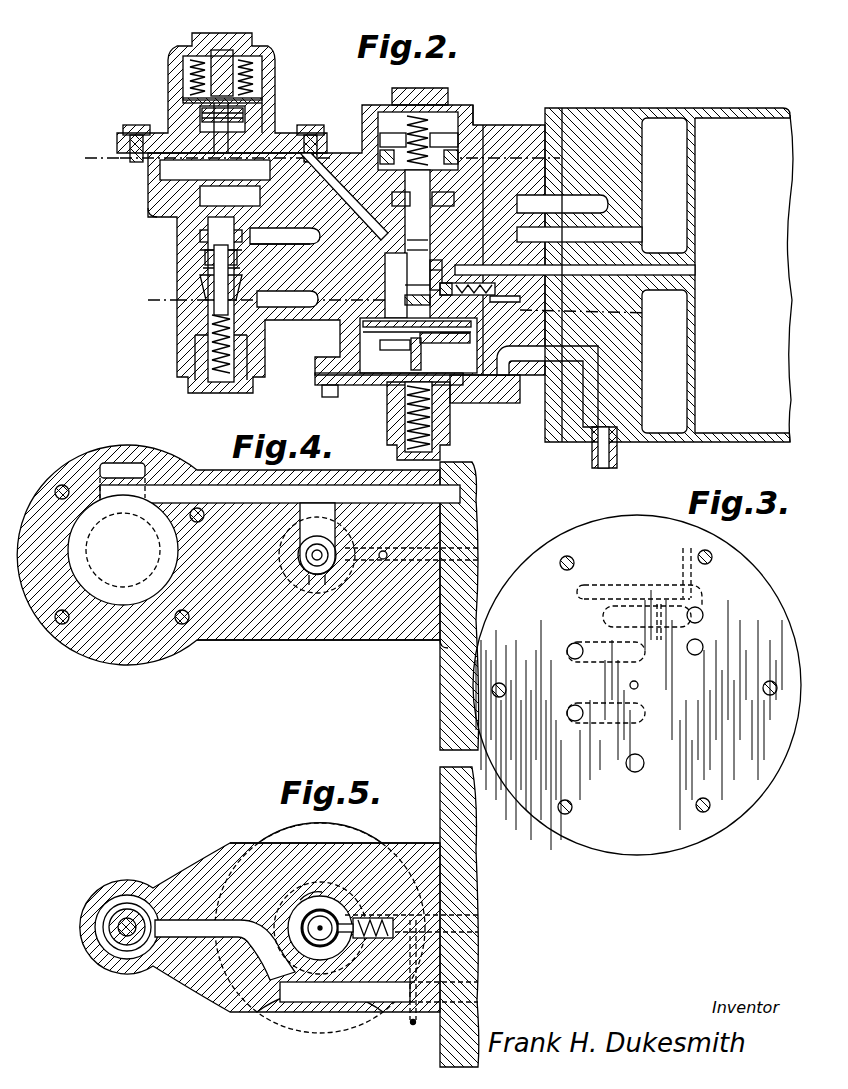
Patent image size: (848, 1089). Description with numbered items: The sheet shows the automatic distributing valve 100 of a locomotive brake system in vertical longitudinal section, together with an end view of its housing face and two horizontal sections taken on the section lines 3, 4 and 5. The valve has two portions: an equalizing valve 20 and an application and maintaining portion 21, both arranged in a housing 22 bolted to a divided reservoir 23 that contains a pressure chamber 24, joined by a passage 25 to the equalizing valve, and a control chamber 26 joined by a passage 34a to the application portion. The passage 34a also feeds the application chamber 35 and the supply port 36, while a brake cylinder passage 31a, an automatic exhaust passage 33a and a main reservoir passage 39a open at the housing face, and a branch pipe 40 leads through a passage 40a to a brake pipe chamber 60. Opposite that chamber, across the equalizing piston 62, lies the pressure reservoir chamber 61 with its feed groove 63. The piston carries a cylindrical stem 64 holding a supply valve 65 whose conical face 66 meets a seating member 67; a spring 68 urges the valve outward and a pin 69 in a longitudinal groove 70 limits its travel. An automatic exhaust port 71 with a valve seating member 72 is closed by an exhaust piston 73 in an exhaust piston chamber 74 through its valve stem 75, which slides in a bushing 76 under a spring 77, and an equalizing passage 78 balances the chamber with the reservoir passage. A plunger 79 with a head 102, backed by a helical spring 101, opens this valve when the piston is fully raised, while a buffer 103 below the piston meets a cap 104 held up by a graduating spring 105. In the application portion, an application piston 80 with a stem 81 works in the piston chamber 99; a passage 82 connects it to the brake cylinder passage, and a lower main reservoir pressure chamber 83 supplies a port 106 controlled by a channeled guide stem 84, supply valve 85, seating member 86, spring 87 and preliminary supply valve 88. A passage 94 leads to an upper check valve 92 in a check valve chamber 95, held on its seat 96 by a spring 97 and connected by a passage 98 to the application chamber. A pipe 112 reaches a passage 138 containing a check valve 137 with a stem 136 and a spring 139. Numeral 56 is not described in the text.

In FIG. 2, the section line 3 is at (562, 442).
In FIG. 2, the section line 4 is at (363, 195).
In FIG. 2, the section line 5 is at (398, 307).
In FIG. 2, the equalizing valve 20 is at (381, 86).
In FIG. 4, the equalizing valve 20 is at (331, 646).
In FIG. 5, the equalizing valve 20 is at (335, 1032).
In FIG. 2, the application and maintaining portion 21 is at (151, 69).
In FIG. 4, the application and maintaining portion 21 is at (149, 446).
In FIG. 5, the application and maintaining portion 21 is at (81, 881).
In FIG. 2, the housing 22 is at (148, 200).
In FIG. 4, the housing 22 is at (118, 665).
In FIG. 3, the housing 22 is at (637, 685).
In FIG. 5, the housing 22 is at (230, 1005).
In FIG. 2, the divided reservoir 23 is at (748, 108).
In FIG. 4, the divided reservoir 23 is at (478, 528).
In FIG. 5, the divided reservoir 23 is at (478, 886).
In FIG. 2, the pressure chamber 24 is at (745, 278).
In FIG. 2, the passage 25 is at (690, 270).
In FIG. 4, the passage 25 is at (478, 548).
In FIG. 3, the passage 25 is at (638, 685).
In FIG. 2, the control chamber 26 is at (664, 361).
In FIG. 2, the brake cylinder passage 31a is at (281, 235).
In FIG. 3, the brake cylinder passage 31a is at (567, 651).
In FIG. 2, the automatic exhaust passage 33a is at (562, 204).
In FIG. 3, the automatic exhaust passage 33a is at (704, 615).
In FIG. 2, the passage 34a is at (579, 234).
In FIG. 4, the passage 34a is at (280, 494).
In FIG. 3, the passage 34a is at (702, 653).
In FIG. 2, the application chamber 35 is at (200, 112).
In FIG. 4, the application chamber 35 is at (123, 545).
In FIG. 2, the supply port 36 is at (375, 232).
In FIG. 2, the passage 39a is at (287, 299).
In FIG. 3, the passage 39a is at (572, 705).
In FIG. 5, the passage 39a is at (225, 950).
In FIG. 2, the branch pipe 40 is at (618, 458).
In FIG. 2, the passage 40a is at (547, 384).
In FIG. 3, the passage 40a is at (632, 770).
In FIG. 5, the passage 40a is at (478, 908).
In FIG. 2, the seat 56 is at (407, 286).
In FIG. 2, the brake pipe chamber 60 is at (418, 345).
In FIG. 2, the pressure reservoir chamber 61 is at (396, 285).
In FIG. 5, the pressure reservoir chamber 61 is at (307, 1000).
In FIG. 2, the equalizing piston 62 is at (392, 353).
In FIG. 2, the feed groove 63 is at (455, 334).
In FIG. 2, the cylindrical stem 64 is at (417, 324).
In FIG. 5, the cylindrical stem 64 is at (320, 960).
In FIG. 4, the supply valve 65 is at (322, 545).
In FIG. 5, the supply valve 65 is at (318, 910).
In FIG. 2, the conical face 66 is at (433, 255).
In FIG. 2, the seating member 67 is at (433, 245).
In FIG. 2, the spring 68 is at (417, 332).
In FIG. 2, the pin 69 is at (443, 271).
In FIG. 5, the pin 69 is at (302, 905).
In FIG. 2, the longitudinal groove 70 is at (444, 270).
In FIG. 2, the automatic exhaust port 71 is at (443, 201).
In FIG. 4, the automatic exhaust port 71 is at (320, 575).
In FIG. 2, the valve seating member 72 is at (401, 201).
In FIG. 4, the valve seating member 72 is at (316, 575).
In FIG. 2, the exhaust piston 73 is at (393, 139).
In FIG. 2, the exhaust piston chamber 74 is at (444, 139).
In FIG. 2, the valve stem 75 is at (380, 152).
In FIG. 2, the bushing 76 is at (385, 170).
In FIG. 2, the spring 77 is at (440, 92).
In FIG. 2, the equalizing passage 78 is at (505, 125).
In FIG. 4, the equalizing passage 78 is at (383, 560).
In FIG. 2, the plunger 79 is at (407, 303).
In FIG. 5, the plunger 79 is at (321, 910).
In FIG. 2, the application piston 80 is at (150, 175).
In FIG. 4, the application piston 80 is at (123, 550).
In FIG. 2, the stem 81 is at (221, 196).
In FIG. 2, the passage 82 is at (285, 235).
In FIG. 2, the lower main reservoir pressure chamber 83 is at (198, 345).
In FIG. 5, the lower main reservoir pressure chamber 83 is at (125, 965).
In FIG. 2, the channeled guide stem 84 is at (200, 255).
In FIG. 2, the supply valve 85 is at (205, 285).
In FIG. 5, the supply valve 85 is at (110, 945).
In FIG. 2, the seating member 86 is at (200, 270).
In FIG. 5, the seating member 86 is at (118, 928).
In FIG. 2, the spring 87 is at (222, 385).
In FIG. 2, the preliminary supply valve 88 is at (218, 306).
In FIG. 2, the upper check valve 92 is at (255, 87).
In FIG. 2, the passage 94 is at (183, 100).
In FIG. 2, the check valve chamber 95 is at (262, 70).
In FIG. 2, the seat 96 is at (262, 101).
In FIG. 2, the spring 97 is at (258, 52).
In FIG. 4, the spring 97 is at (122, 463).
In FIG. 2, the passage 98 is at (268, 117).
In FIG. 2, the piston chamber 99 is at (148, 212).
In FIG. 2, the automatic distributing valve 100 is at (484, 92).
In FIG. 4, the automatic distributing valve 100 is at (268, 654).
In FIG. 3, the automatic distributing valve 100 is at (738, 845).
In FIG. 5, the automatic distributing valve 100 is at (261, 825).
In FIG. 2, the helical spring 101 is at (411, 354).
In FIG. 2, the head 102 is at (445, 348).
In FIG. 2, the buffer 103 is at (395, 385).
In FIG. 2, the cap 104 is at (448, 410).
In FIG. 2, the graduating spring 105 is at (392, 430).
In FIG. 2, the port 106 is at (205, 258).
In FIG. 5, the pipe 112 is at (410, 1022).
In FIG. 2, the stem 136 is at (452, 296).
In FIG. 5, the stem 136 is at (358, 916).
In FIG. 2, the check valve 137 is at (478, 296).
In FIG. 5, the check valve 137 is at (385, 916).
In FIG. 2, the passage 138 is at (500, 300).
In FIG. 5, the passage 138 is at (478, 995).
In FIG. 2, the spring 139 is at (470, 285).
In FIG. 5, the spring 139 is at (478, 931).